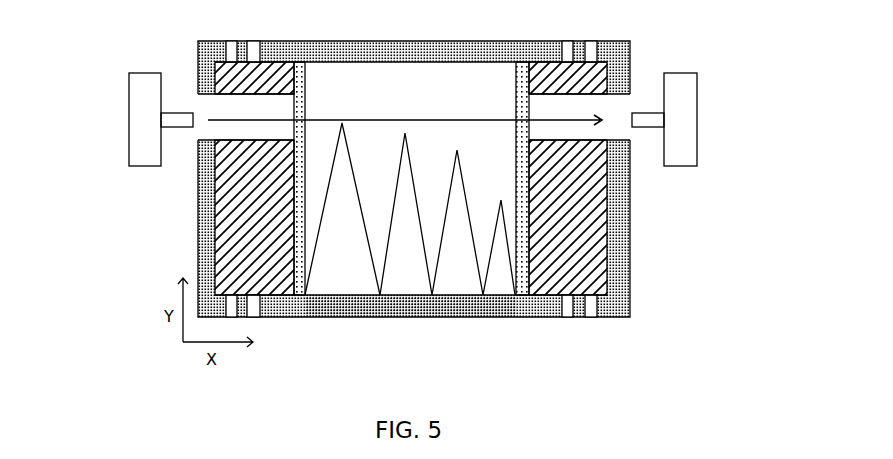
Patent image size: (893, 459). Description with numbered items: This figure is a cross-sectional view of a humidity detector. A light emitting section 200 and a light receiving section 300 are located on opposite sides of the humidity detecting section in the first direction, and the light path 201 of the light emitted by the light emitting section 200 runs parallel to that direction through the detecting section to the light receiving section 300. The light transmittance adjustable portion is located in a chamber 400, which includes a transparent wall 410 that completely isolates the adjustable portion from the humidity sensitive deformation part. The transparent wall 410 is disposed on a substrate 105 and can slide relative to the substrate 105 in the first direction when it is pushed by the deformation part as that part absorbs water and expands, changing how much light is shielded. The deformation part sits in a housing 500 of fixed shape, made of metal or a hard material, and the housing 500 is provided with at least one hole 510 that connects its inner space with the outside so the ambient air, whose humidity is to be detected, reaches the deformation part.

The light emitting section 200 is at (144, 101).
The light receiving section 300 is at (682, 90).
The chamber 400 is at (312, 72).
The transparent wall 410 is at (520, 75).
The light path 201 is at (395, 118).
The substrate 105 is at (468, 310).
The housing 500 is at (628, 275).
The hole 510 is at (575, 305).